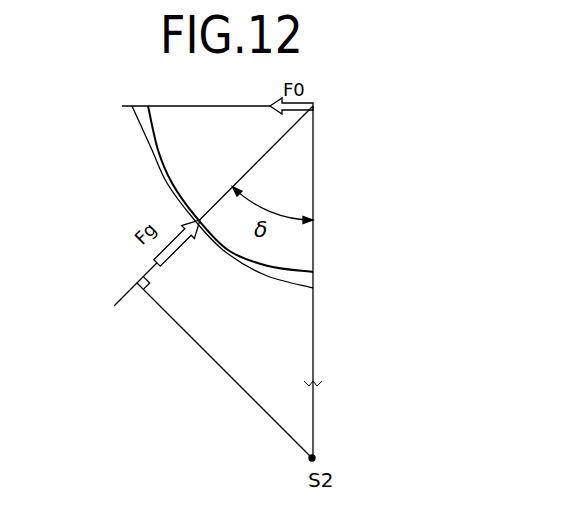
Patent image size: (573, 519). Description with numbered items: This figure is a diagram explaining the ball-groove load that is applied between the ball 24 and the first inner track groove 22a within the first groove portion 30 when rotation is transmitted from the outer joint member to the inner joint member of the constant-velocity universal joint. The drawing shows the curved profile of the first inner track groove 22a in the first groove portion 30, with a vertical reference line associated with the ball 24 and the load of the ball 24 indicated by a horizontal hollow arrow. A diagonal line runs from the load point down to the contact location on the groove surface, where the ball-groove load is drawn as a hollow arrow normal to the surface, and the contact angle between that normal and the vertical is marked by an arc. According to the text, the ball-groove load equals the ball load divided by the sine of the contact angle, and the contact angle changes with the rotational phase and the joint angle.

The first groove portion 30 is at (141, 102).
The first inner track groove 22a is at (160, 152).
The ball 24 is at (297, 172).